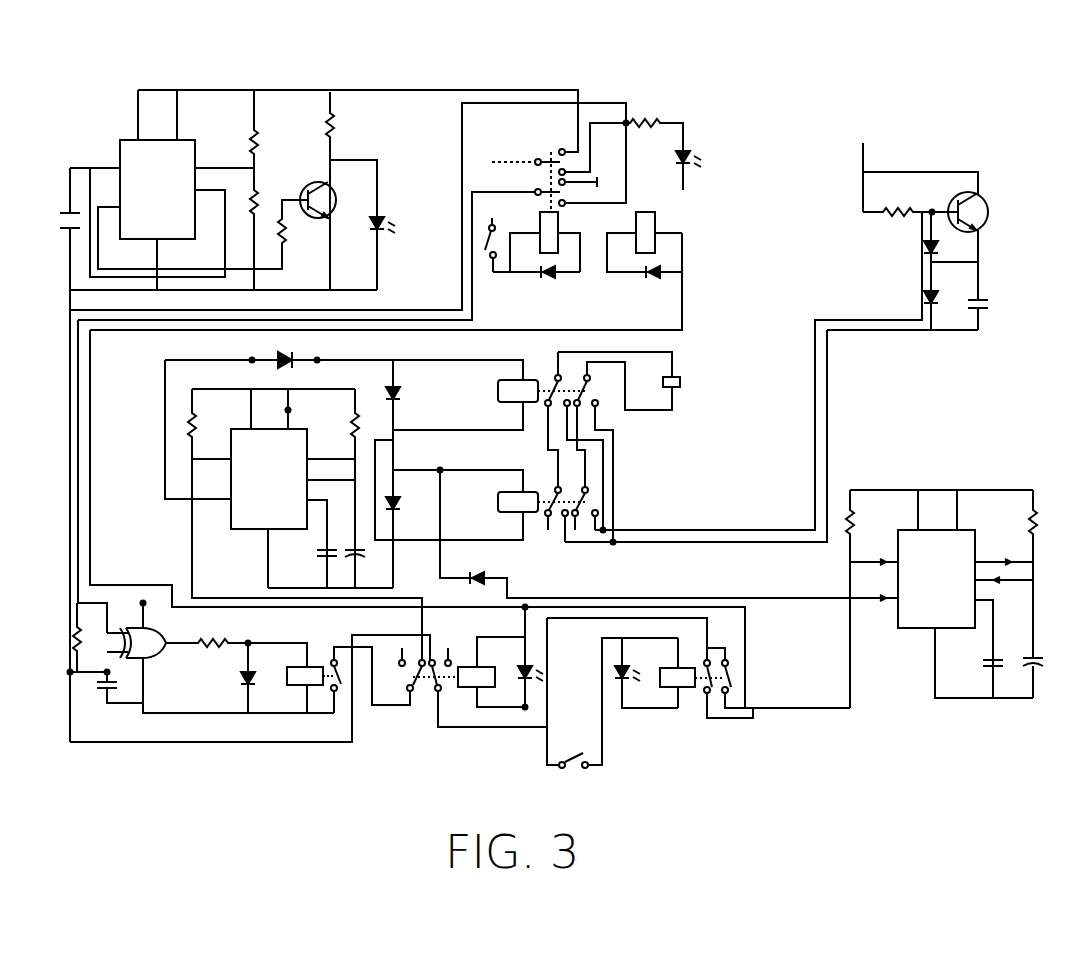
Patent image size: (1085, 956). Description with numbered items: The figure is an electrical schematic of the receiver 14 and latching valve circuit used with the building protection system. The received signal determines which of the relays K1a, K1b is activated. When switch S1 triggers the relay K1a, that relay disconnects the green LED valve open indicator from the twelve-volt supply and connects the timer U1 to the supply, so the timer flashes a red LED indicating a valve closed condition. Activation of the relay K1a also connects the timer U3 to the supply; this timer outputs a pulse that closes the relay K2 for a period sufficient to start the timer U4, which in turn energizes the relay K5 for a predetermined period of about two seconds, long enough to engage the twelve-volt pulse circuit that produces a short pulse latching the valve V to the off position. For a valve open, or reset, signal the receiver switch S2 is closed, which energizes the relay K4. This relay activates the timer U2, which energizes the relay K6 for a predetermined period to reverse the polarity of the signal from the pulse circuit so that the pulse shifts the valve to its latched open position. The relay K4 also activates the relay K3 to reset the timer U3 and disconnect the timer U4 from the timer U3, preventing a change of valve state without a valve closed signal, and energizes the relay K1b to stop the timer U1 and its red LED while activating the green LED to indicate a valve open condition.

The receiver 14 is at (517, 82).
The timer U1 is at (157, 189).
The timer U2 is at (936, 579).
The timer U3 is at (153, 653).
The timer U4 is at (269, 479).
The relay K1a is at (549, 232).
The relay K1b is at (645, 232).
The relay K2 is at (305, 676).
The relay K3 is at (476, 677).
The relay K4 is at (677, 677).
The relay K5 is at (518, 391).
The relay K6 is at (518, 502).
The switch S1 is at (491, 258).
The switch S2 is at (572, 776).